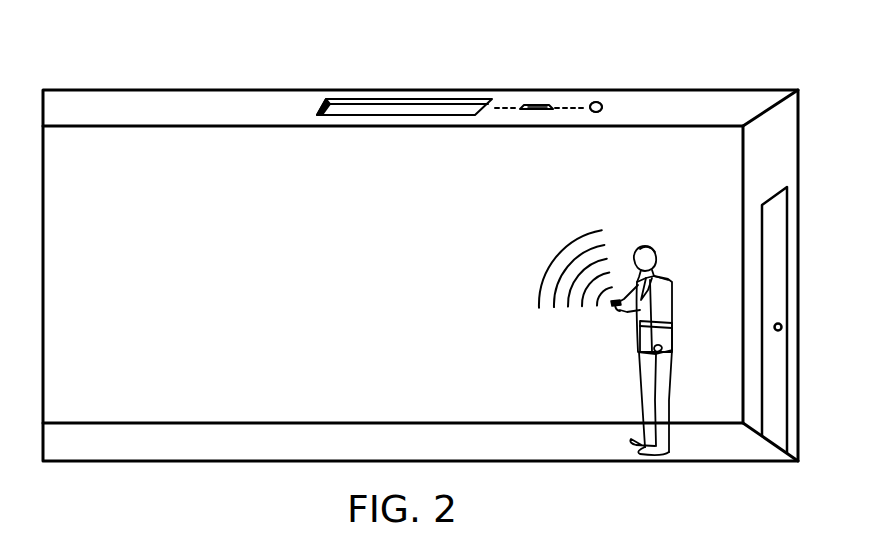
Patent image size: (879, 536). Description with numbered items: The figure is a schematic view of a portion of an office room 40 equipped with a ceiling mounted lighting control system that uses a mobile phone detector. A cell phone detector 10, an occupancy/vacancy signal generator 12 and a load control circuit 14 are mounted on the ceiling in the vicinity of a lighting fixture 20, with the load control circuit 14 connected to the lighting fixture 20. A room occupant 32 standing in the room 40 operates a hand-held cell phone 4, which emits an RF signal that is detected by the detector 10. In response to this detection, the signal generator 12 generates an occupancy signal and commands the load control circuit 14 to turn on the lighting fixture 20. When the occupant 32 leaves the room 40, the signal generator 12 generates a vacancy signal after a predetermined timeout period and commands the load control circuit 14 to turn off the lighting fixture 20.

The office room 40 is at (114, 77).
The lighting fixture 20 is at (318, 108).
The load control circuit 14 is at (544, 104).
The cell phone detector 10 is at (603, 106).
The occupancy/vacancy signal generator 12 is at (596, 107).
The cell phone 4 is at (609, 303).
The room occupant 32 is at (668, 278).